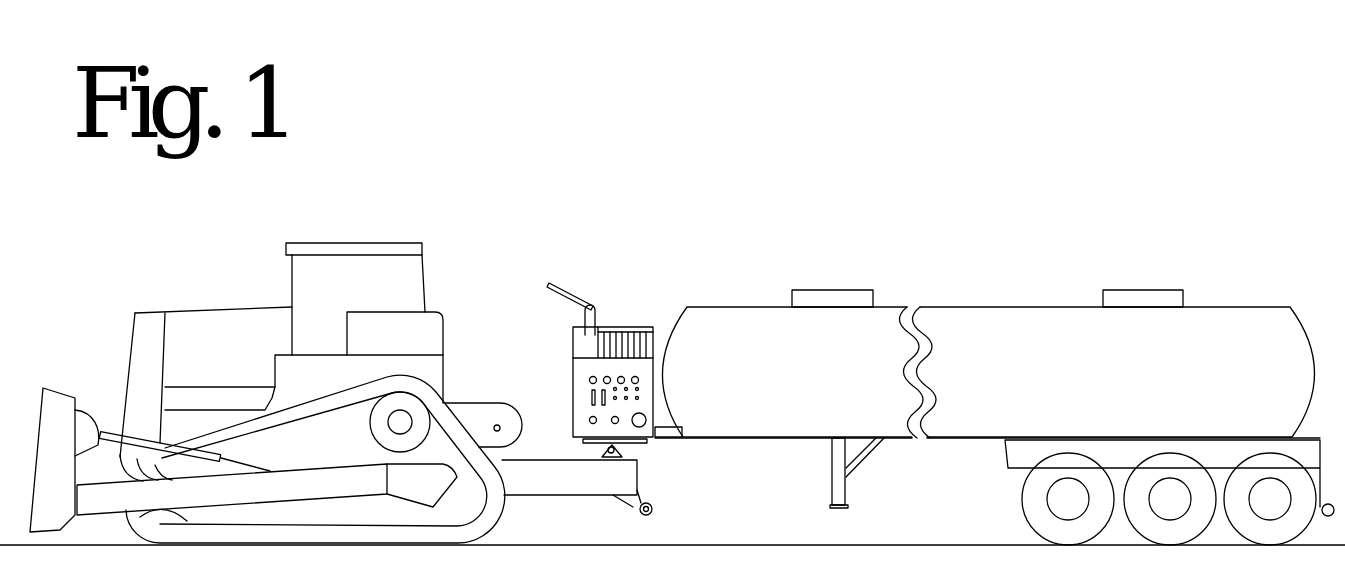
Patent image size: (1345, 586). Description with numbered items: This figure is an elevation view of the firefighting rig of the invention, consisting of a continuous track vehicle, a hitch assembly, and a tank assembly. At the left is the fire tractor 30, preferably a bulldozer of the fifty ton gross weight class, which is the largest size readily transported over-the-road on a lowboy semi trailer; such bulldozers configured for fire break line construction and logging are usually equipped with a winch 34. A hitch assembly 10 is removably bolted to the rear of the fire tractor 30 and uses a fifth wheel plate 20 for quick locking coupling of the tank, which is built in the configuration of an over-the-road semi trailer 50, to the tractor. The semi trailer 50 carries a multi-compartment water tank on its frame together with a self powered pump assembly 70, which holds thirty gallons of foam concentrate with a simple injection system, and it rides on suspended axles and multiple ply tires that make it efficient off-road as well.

The hitch assembly 10 is at (562, 493).
The fifth wheel plate 20 is at (637, 443).
The fire tractor 30 is at (347, 244).
The winch 34 is at (466, 402).
The semi trailer 50 is at (708, 306).
The pump assembly 70 is at (574, 380).